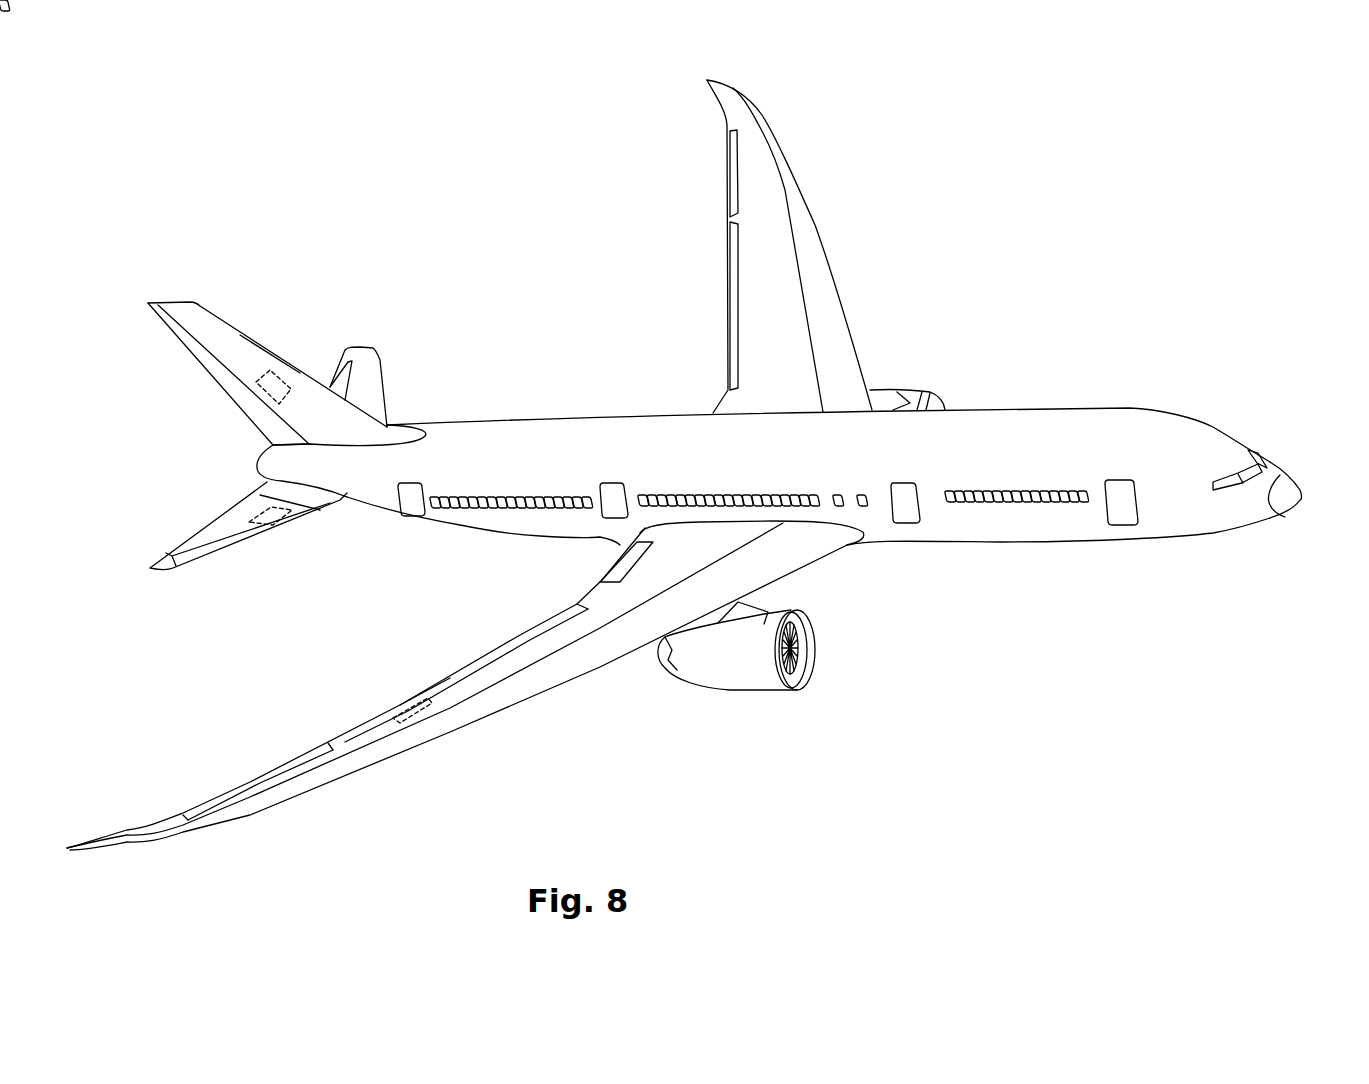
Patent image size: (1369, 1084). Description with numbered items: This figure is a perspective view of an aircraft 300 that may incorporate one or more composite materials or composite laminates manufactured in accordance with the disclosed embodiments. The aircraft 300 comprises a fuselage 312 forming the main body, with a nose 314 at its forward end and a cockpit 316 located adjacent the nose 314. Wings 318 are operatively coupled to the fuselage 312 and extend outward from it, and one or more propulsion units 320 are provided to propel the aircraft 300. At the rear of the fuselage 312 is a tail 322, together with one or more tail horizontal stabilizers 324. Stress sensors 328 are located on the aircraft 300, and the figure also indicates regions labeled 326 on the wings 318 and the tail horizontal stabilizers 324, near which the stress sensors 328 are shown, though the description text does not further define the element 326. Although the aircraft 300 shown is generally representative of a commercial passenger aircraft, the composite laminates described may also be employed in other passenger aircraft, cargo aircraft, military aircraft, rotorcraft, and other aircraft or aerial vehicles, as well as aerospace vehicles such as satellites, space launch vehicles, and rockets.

The aircraft 300 is at (1046, 200).
The fuselage 312 is at (1010, 425).
The nose 314 is at (1280, 505).
The cockpit 316 is at (1255, 452).
The wings 318 is at (780, 167).
The propulsion units 320 is at (812, 676).
The tail 322 is at (218, 333).
The tail horizontal stabilizers 324 is at (370, 382).
The leading edge 326 is at (297, 372).
The stress sensors 328 is at (273, 370).